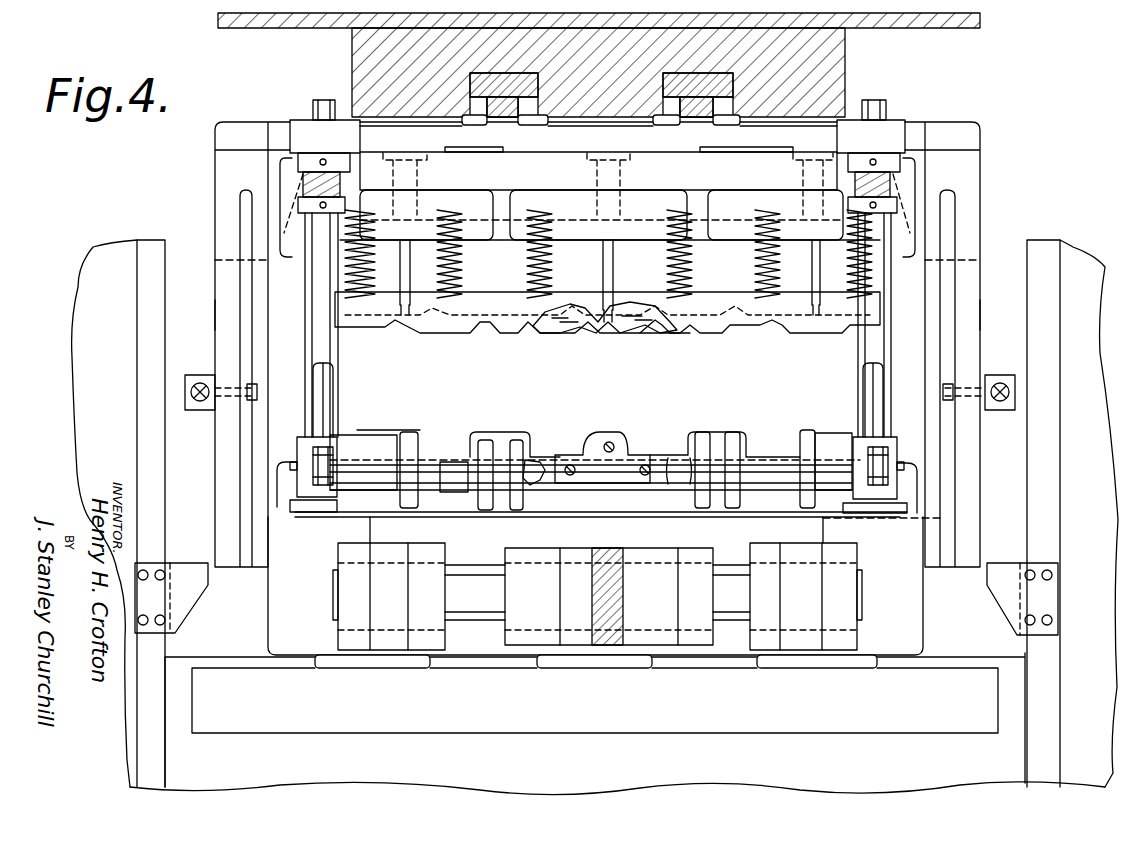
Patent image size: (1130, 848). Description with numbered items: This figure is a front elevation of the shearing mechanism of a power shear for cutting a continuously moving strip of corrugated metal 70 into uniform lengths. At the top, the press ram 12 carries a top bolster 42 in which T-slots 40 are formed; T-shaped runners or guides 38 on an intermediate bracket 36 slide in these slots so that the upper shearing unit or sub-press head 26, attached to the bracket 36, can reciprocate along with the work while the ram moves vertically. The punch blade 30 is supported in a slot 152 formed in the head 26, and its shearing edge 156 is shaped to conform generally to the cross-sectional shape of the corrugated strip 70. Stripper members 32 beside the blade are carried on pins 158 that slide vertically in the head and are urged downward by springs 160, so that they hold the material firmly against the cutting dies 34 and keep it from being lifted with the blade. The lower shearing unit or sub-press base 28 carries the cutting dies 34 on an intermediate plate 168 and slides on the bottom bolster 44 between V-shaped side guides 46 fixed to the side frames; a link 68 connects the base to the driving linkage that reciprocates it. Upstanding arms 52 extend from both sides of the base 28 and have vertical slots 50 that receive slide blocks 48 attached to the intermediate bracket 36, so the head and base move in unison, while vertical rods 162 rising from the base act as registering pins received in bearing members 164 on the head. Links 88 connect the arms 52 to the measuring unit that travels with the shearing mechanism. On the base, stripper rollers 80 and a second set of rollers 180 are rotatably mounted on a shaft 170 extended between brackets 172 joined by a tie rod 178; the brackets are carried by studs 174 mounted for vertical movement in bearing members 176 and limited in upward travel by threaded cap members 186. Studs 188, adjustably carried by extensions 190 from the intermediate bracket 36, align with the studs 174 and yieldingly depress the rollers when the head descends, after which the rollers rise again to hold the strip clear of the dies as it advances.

The press ram 12 is at (293, 30).
The top bolster 42 is at (352, 62).
The T-slots 40 is at (505, 73).
The T-shaped runners or guides 38 is at (540, 78).
The upper shearing unit or sub-press head 26 is at (643, 168).
The extensions 190 is at (440, 147).
The intermediate bracket 36 is at (549, 150).
The slot 152 is at (645, 186).
The slide blocks 48 is at (218, 152).
The bearing members 164 is at (280, 175).
The studs 188 is at (305, 225).
The vertical slots 50 is at (222, 286).
The upstanding arms 52 is at (215, 316).
The vertical rods 162 is at (315, 333).
The studs 174 is at (320, 378).
The links 88 is at (188, 386).
The brackets 172 is at (300, 446).
The intermediate plate 168 is at (285, 487).
The V-shaped side guides 46 is at (203, 558).
The threaded cap member 186 is at (340, 518).
The bearing members 176 is at (268, 630).
The lower shearing unit or sub-press base 28 is at (1005, 622).
The bottom bolster 44 is at (990, 705).
The link 68 is at (628, 612).
The stripper rollers 80 is at (410, 433).
The strip of corrugated metal 70 is at (420, 440).
The second set of rollers 180 is at (540, 462).
The cutting dies 34 is at (630, 420).
The shaft 170 is at (465, 478).
The tie rod 178 is at (535, 492).
The springs 160 is at (490, 275).
The pins 158 is at (412, 282).
The stripper members 32 is at (535, 336).
The shearing edge 156 is at (598, 335).
The punch blade 30 is at (660, 332).